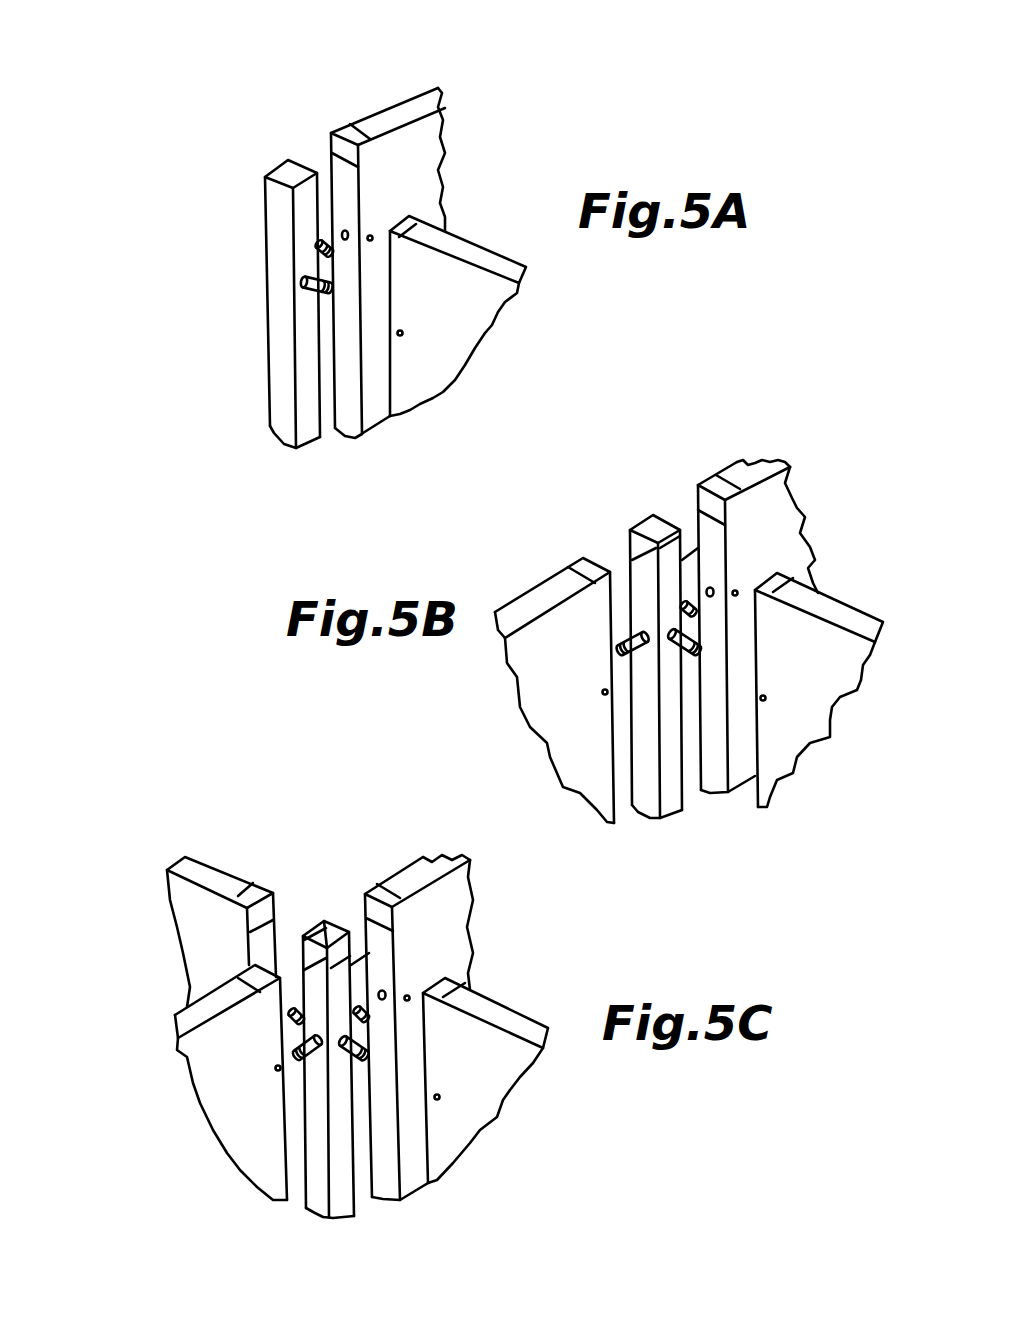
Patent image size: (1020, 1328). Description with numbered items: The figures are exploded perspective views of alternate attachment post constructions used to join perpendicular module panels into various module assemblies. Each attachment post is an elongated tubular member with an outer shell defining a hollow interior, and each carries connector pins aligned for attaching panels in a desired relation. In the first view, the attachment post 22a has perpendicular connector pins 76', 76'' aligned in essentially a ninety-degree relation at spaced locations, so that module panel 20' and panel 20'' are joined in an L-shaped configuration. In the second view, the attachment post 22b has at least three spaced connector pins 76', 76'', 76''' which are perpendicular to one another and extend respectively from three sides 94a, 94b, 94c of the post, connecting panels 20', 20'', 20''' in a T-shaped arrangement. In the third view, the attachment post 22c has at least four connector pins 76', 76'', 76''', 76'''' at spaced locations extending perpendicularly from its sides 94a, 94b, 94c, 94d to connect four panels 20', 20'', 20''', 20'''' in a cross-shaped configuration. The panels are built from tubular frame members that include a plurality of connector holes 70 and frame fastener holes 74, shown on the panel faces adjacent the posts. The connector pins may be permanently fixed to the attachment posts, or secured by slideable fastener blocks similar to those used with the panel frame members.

In FIG. 5A, the module panel 20' is at (406, 225).
In FIG. 5B, the module panel 20' is at (772, 594).
In FIG. 5C, the module panel 20' is at (436, 997).
In FIG. 5A, the module panel 20'' is at (467, 306).
In FIG. 5B, the module panel 20'' is at (698, 678).
In FIG. 5C, the module panel 20'' is at (526, 1065).
In FIG. 5C, the module panel 20''' is at (177, 1082).
In FIG. 5C, the module panel 20'''' is at (191, 893).
In FIG. 5A, the attachment post 22a is at (281, 158).
In FIG. 5B, the attachment post 22b is at (663, 506).
In FIG. 5C, the attachment post 22c is at (333, 906).
In FIG. 5A, the connector hole 70 is at (344, 230).
In FIG. 5B, the connector hole 70 is at (712, 588).
In FIG. 5C, the connector hole 70 is at (385, 992).
In FIG. 5A, the frame fastener hole 74 is at (372, 236).
In FIG. 5B, the frame fastener hole 74 is at (737, 591).
In FIG. 5C, the frame fastener hole 74 is at (409, 996).
In FIG. 5A, the connector pin 76' is at (246, 217).
In FIG. 5B, the connector pin 76' is at (796, 601).
In FIG. 5C, the connector pin 76' is at (436, 1104).
In FIG. 5A, the connector pin 76'' is at (248, 315).
In FIG. 5B, the connector pin 76'' is at (712, 745).
In FIG. 5C, the connector pin 76'' is at (270, 1139).
In FIG. 5B, the connector pin 76''' is at (538, 670).
In FIG. 5C, the connector pin 76''' is at (222, 1110).
In FIG. 5C, the connector pin 76'''' is at (189, 1043).
In FIG. 5B, the side of attachment post 94a is at (673, 550).
In FIG. 5C, the side of attachment post 94a is at (353, 966).
In FIG. 5B, the side of attachment post 94b is at (697, 547).
In FIG. 5C, the side of attachment post 94b is at (350, 955).
In FIG. 5B, the side of attachment post 94c is at (640, 557).
In FIG. 5C, the side of attachment post 94c is at (311, 963).
In FIG. 5C, the side of attachment post 94d is at (306, 933).